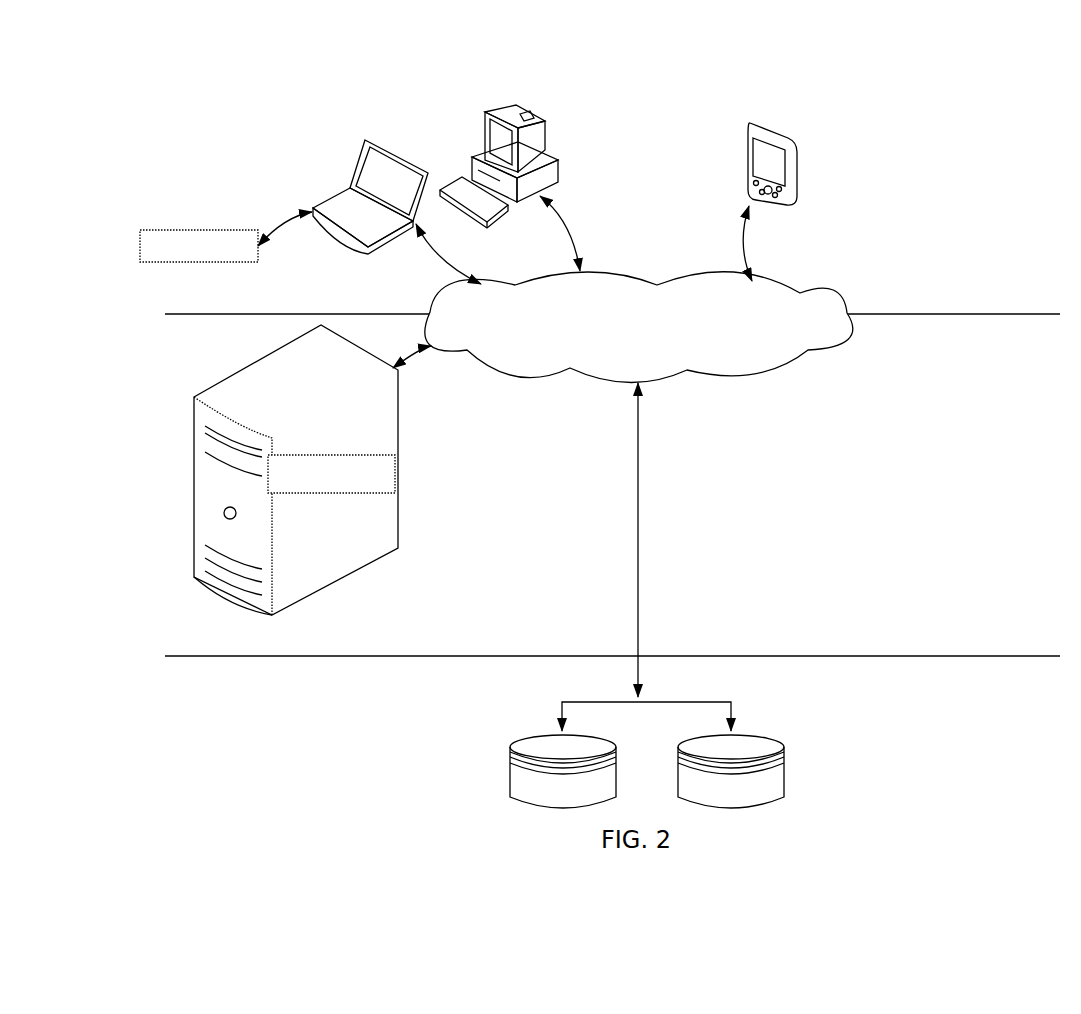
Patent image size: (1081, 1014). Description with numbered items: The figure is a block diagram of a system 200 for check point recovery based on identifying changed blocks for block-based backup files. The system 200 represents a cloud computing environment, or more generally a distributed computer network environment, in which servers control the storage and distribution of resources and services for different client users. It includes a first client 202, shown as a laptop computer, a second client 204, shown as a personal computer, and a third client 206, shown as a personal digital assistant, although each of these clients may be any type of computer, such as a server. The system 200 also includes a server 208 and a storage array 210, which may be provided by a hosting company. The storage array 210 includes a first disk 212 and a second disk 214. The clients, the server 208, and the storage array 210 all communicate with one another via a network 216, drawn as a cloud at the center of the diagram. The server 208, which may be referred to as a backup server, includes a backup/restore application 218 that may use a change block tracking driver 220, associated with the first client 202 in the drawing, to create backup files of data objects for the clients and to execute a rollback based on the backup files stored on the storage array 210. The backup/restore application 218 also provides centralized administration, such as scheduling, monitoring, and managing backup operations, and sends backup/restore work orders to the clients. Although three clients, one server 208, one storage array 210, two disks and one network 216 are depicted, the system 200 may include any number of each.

The system 200 is at (612, 118).
The first client 202 is at (362, 140).
The second client 204 is at (484, 110).
The third client 206 is at (765, 123).
The server 208 is at (195, 542).
The storage array 210 is at (761, 748).
The first disk 212 is at (520, 738).
The second disk 214 is at (683, 738).
The network 216 is at (639, 327).
The backup/restore application 218 is at (331, 474).
The change block tracking driver 220 is at (226, 237).